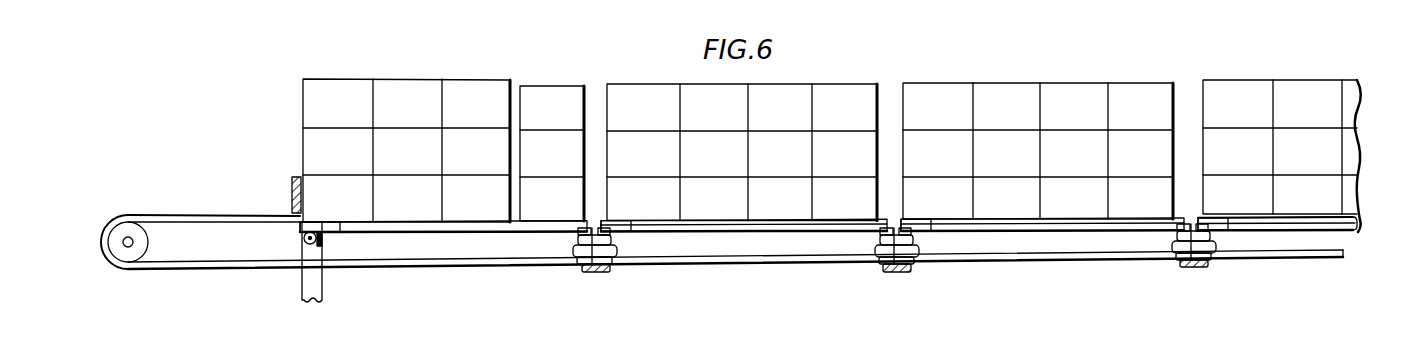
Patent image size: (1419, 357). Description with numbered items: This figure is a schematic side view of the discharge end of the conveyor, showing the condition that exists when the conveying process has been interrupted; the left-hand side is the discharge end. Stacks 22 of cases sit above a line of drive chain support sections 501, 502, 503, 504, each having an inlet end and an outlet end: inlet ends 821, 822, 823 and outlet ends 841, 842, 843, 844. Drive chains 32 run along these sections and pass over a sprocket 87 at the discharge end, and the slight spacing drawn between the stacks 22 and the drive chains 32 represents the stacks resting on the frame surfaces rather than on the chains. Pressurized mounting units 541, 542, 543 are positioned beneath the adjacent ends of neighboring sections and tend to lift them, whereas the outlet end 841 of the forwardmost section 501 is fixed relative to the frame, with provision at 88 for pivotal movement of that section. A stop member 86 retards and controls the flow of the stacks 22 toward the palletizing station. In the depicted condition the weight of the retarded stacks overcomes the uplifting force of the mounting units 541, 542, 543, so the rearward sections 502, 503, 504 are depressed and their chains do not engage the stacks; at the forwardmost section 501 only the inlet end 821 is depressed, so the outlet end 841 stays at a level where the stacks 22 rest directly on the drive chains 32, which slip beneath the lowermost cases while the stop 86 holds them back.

The stacks 22 is at (485, 105).
The drive chains 32 is at (160, 216).
The stop member 86 is at (290, 185).
The sprocket 87 is at (127, 262).
The pivot provision 88 is at (323, 247).
The forwardmost drive chain support section 501 is at (492, 232).
The second drive chain support section 502 is at (790, 233).
The third drive chain support section 503 is at (1030, 235).
The fourth drive chain support section 504 is at (1325, 228).
The outlet end of forwardmost support section 841 is at (340, 228).
The outlet end of second support section 842 is at (615, 247).
The outlet end of third support section 843 is at (907, 247).
The outlet end of fourth support section 844 is at (1197, 226).
The inlet end of forwardmost support section 821 is at (592, 242).
The inlet end of second support section 822 is at (897, 265).
The inlet end of third support section 823 is at (1185, 266).
The first mounting unit 541 is at (573, 257).
The second mounting unit 542 is at (878, 257).
The third mounting unit 543 is at (1172, 252).